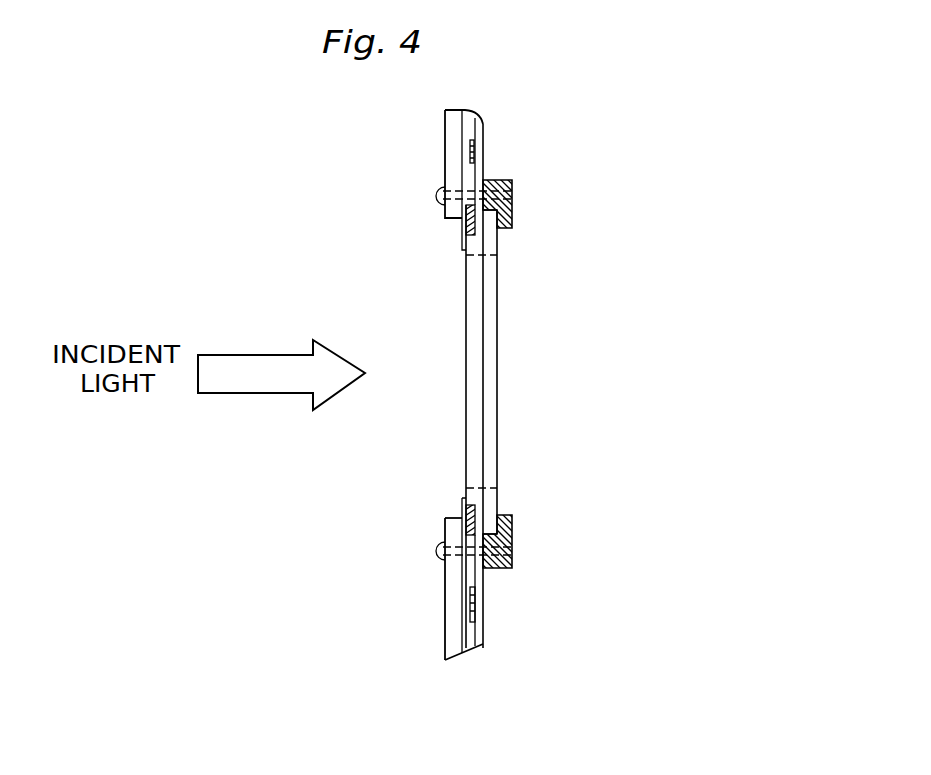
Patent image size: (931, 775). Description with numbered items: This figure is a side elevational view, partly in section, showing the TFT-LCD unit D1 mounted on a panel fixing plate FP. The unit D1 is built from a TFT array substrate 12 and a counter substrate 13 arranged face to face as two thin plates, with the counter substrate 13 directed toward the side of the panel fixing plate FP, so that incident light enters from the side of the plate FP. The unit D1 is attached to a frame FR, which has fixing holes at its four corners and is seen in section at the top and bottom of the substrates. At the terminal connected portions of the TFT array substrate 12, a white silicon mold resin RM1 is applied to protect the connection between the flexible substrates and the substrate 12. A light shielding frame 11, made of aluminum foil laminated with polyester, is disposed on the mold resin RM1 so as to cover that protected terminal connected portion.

The panel fixing plate FP is at (447, 152).
The frame FR is at (505, 179).
The mold resin RM1 is at (478, 231).
The light shielding frame 11 is at (462, 228).
The counter substrate 13 is at (473, 335).
The TFT array substrate 12 is at (490, 453).
The TFT-LCD unit D1 is at (680, 329).